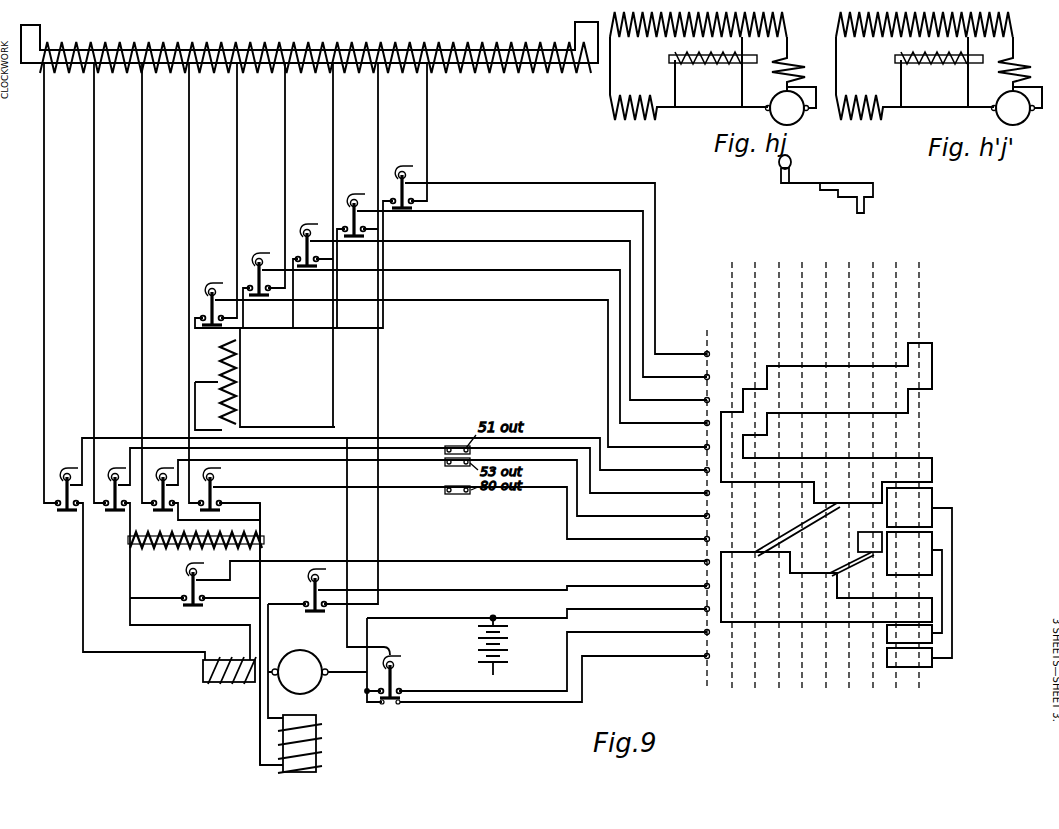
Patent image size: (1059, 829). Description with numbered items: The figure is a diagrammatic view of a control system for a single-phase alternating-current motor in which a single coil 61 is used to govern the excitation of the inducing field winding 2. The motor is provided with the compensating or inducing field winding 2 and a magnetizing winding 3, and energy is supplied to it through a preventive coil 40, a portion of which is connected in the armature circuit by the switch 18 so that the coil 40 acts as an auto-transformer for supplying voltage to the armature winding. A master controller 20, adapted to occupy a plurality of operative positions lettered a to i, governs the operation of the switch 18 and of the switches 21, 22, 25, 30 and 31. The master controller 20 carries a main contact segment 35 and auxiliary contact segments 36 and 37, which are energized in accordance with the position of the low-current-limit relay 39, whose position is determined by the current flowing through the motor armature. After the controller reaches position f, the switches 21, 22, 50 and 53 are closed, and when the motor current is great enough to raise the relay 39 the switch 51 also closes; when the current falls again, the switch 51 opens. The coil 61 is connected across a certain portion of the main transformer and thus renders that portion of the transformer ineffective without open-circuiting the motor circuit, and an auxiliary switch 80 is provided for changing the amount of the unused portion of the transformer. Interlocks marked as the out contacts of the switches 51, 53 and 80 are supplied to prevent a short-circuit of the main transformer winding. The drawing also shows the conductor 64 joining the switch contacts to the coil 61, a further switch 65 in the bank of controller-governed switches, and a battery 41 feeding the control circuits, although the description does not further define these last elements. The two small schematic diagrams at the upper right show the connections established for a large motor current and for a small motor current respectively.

In FIG. 9, the inducing field winding 2 is at (233, 686).
In FIG. 9, the magnetizing winding 3 is at (320, 750).
In FIG. 9, the switch 18 is at (311, 581).
In FIG. 9, the master controller 20 is at (856, 464).
In FIG. 9, the switch 21 is at (453, 355).
In FIG. 9, the switch 22 is at (477, 327).
In FIG. 9, the switch 25 is at (501, 301).
In FIG. 9, the switch 30 is at (524, 274).
In FIG. 9, the switch 31 is at (549, 248).
In FIG. 9, the main contact segment 35 is at (932, 366).
In FIG. 9, the auxiliary contact segment 36 is at (885, 633).
In FIG. 9, the auxiliary contact segment 37 is at (885, 658).
In FIG. 9, the low-current-limit relay 39 is at (397, 652).
In FIG. 9, the preventive coil 40 is at (243, 383).
In FIG. 9, the battery 41 is at (512, 650).
In FIG. 9, the switch 50 is at (64, 469).
In FIG. 9, the switch 51 is at (189, 577).
In FIG. 9, the switch 53 is at (218, 478).
In FIG. 9, the single-coil inductive device 61 is at (127, 542).
In FIG. 9hi, the single-coil inductive device 61 is at (716, 72).
In FIG. 9, the conductor 64 is at (262, 525).
In FIG. 9, the switch 65 is at (402, 553).
In FIG. 9, the auxiliary switch 80 is at (426, 486).